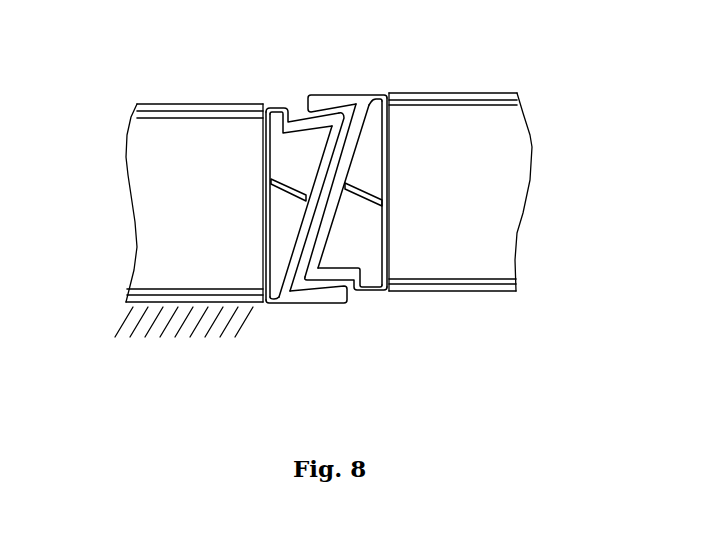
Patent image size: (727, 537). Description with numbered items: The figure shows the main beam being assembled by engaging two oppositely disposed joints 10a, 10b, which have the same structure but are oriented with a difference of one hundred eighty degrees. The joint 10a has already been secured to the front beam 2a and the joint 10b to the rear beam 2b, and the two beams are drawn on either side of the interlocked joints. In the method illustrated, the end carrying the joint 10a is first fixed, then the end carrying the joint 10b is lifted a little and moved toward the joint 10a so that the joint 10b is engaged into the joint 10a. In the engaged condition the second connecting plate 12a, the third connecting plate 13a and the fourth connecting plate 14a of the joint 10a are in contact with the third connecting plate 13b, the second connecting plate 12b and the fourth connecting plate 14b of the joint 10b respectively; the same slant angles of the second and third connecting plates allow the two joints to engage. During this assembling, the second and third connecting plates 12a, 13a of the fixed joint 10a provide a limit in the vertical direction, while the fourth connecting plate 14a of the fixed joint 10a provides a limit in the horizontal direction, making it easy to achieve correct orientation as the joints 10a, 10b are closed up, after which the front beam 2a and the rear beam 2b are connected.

The front beam 2a is at (157, 237).
The rear beam 2b is at (493, 265).
The joint 10a is at (335, 207).
The joint 10b is at (335, 194).
The second connecting plate 12a is at (298, 125).
The second connecting plate 12b is at (352, 288).
The third connecting plate 13a is at (305, 297).
The third connecting plate 13b is at (343, 96).
The fourth connecting plate 14a is at (303, 244).
The fourth connecting plate 14b is at (357, 148).